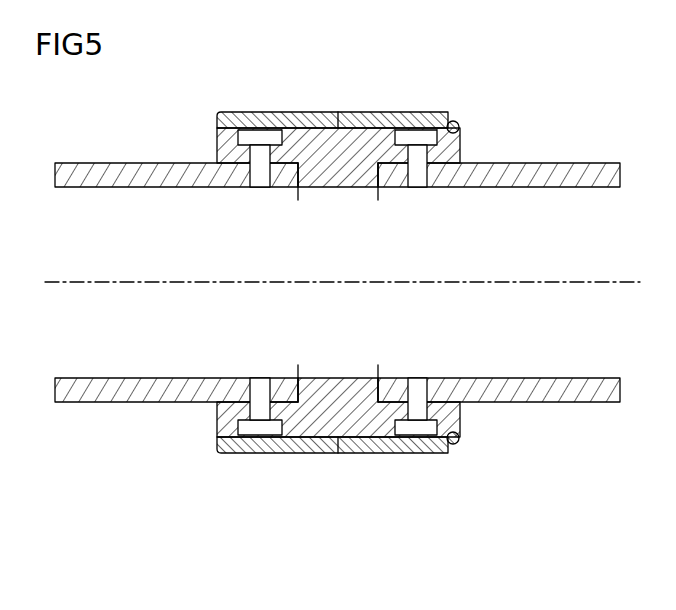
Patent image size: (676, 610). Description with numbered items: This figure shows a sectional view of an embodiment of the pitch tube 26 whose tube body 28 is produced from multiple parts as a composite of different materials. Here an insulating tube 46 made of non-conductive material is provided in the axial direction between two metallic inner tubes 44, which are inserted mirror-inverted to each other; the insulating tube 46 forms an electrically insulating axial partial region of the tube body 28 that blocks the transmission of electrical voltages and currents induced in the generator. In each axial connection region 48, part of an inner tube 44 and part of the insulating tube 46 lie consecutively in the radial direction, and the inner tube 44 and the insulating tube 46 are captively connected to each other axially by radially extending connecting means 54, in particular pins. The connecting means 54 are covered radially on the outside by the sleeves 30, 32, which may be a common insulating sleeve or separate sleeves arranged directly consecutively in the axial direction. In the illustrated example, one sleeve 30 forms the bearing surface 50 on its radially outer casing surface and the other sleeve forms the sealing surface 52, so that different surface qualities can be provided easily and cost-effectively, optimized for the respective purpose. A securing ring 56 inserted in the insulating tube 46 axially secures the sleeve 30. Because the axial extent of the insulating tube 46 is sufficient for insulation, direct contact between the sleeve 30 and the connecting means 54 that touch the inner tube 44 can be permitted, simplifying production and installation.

The pitch tube 26 is at (557, 128).
The tube body 28 is at (523, 393).
The sleeve 30 is at (308, 112).
The connecting element 32 is at (365, 112).
The inner tube 44 is at (98, 163).
The insulating tube 46 is at (323, 403).
The axial connection region 48 is at (446, 455).
The bearing surface 50 is at (262, 112).
The sealing surface 52 is at (418, 112).
The connecting means 54 is at (238, 136).
The securing ring 56 is at (458, 123).